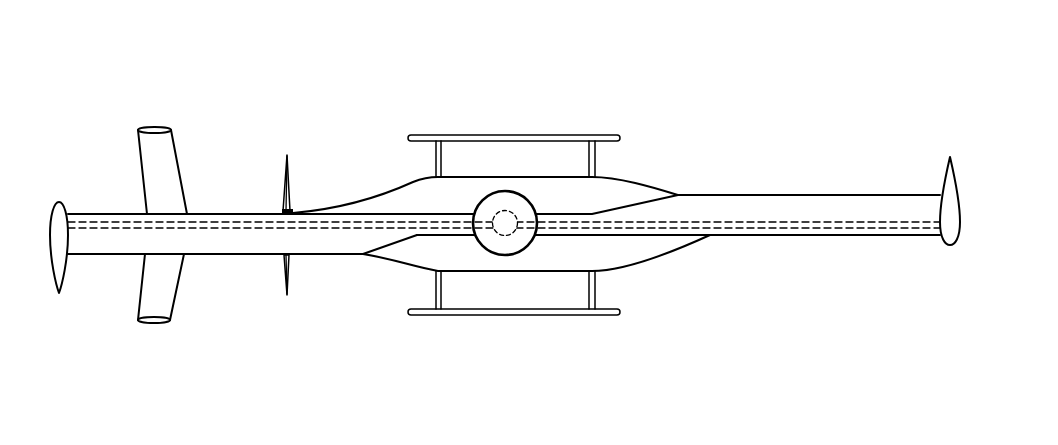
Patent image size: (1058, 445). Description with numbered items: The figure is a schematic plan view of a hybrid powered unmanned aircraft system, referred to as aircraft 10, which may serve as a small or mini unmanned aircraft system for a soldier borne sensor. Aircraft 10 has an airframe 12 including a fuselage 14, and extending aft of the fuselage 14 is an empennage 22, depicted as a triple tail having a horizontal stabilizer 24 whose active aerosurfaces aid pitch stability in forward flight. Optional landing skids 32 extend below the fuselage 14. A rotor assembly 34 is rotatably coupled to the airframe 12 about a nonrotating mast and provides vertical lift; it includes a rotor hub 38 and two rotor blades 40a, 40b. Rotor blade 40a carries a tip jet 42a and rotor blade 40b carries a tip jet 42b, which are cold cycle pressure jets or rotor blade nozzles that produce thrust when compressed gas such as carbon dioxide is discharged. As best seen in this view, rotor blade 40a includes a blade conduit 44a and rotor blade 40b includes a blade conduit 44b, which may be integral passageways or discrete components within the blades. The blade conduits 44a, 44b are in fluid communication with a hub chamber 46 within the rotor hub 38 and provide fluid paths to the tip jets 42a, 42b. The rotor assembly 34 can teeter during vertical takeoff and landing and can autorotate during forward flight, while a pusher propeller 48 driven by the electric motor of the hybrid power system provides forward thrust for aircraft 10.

The aircraft 10 is at (455, 75).
The airframe 12 is at (641, 182).
The fuselage 14 is at (642, 257).
The empennage 22 is at (156, 300).
The horizontal stabilizer 24 is at (157, 147).
The landing skids 32 is at (537, 135).
The rotor assembly 34 is at (328, 254).
The rotor hub 38 is at (505, 192).
The rotor blade 40a is at (851, 200).
The rotor blade 40b is at (90, 248).
The tip jet 42a is at (948, 247).
The tip jet 42b is at (58, 200).
The blade conduit 44a is at (809, 228).
The blade conduit 44b is at (223, 218).
The hub chamber 46 is at (506, 238).
The pusher propeller 48 is at (291, 190).